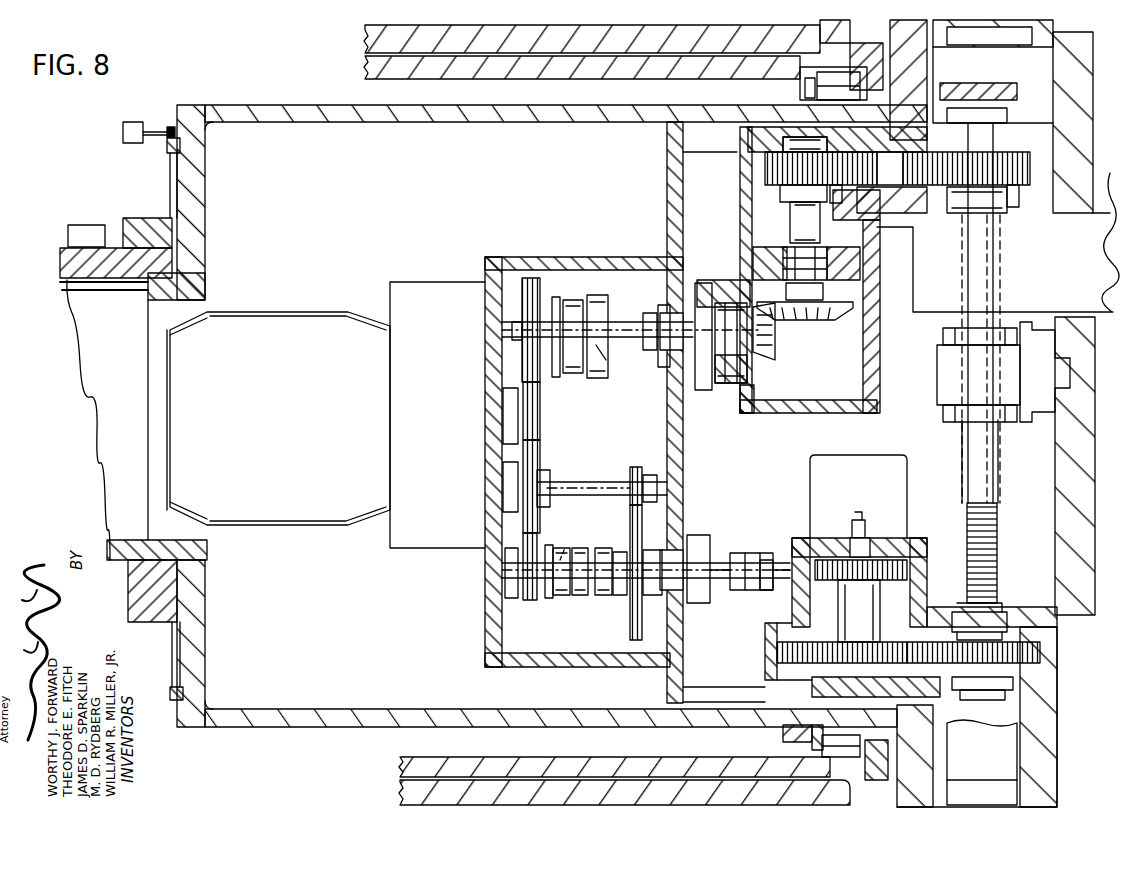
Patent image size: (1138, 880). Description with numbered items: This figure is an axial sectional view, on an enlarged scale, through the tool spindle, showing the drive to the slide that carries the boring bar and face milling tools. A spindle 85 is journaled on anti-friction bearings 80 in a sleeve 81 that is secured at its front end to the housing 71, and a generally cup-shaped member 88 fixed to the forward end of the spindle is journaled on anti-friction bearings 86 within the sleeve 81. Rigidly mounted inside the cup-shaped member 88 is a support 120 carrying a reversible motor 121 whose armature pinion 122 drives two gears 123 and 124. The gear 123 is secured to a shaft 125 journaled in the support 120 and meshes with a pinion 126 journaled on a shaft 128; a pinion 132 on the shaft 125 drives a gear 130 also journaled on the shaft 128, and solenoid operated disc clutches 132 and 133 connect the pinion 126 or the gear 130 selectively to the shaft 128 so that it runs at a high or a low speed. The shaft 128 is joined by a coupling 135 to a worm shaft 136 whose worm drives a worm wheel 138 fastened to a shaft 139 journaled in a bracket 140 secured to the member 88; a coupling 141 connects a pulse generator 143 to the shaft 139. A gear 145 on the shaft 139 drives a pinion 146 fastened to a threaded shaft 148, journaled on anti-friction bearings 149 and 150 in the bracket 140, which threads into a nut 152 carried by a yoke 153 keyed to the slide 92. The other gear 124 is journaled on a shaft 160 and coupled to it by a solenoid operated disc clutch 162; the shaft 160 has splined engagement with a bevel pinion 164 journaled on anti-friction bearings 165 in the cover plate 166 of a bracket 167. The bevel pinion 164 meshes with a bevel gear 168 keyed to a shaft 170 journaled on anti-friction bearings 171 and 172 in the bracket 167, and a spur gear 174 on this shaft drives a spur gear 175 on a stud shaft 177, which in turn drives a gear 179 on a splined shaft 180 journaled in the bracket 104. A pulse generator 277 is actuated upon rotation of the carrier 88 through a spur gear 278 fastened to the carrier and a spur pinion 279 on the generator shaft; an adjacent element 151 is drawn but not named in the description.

The housing 71 is at (364, 42).
The sleeve 81 is at (364, 70).
The cup-shaped member 88 is at (285, 112).
The anti-friction bearings 86 is at (844, 64).
The spur pinion 279 is at (170, 128).
The pulse generator 277 is at (120, 124).
The spur gear 278 is at (173, 700).
The anti-friction bearings 80 is at (92, 228).
The spindle 85 is at (61, 262).
The reversible motor 121 is at (292, 525).
The bracket 104 is at (1104, 177).
The splined shaft 180 is at (998, 223).
The support 120 is at (591, 254).
The gear 124 is at (542, 300).
The pinion 122 is at (540, 423).
The gear 123 is at (537, 462).
The pinion 126 is at (535, 600).
The solenoid operated disc clutch 162 is at (600, 378).
The shaft 160 is at (604, 364).
The shaft 125 is at (590, 477).
The pinion 132 is at (631, 468).
The gear 130 is at (628, 620).
The shaft 128 is at (560, 550).
The solenoid operated disc clutch 133 is at (602, 547).
The coupling 135 is at (749, 551).
The worm shaft 136 is at (776, 590).
The anti-friction bearings 165 is at (738, 385).
The cover plate 166 is at (748, 414).
The bracket 167 is at (876, 376).
The bevel gear 168 is at (793, 321).
The bevel pinion 164 is at (773, 365).
The anti-friction bearing 172 is at (780, 156).
The spur gear 174 is at (765, 177).
The shaft 170 is at (820, 225).
The anti-friction bearing 171 is at (772, 271).
The spur gear 175 is at (842, 186).
The stud shaft 177 is at (897, 218).
The hub 151 is at (952, 214).
The gear 179 is at (1014, 193).
The nut 152 is at (937, 412).
The yoke 153 is at (1042, 418).
The slide 92 is at (1093, 579).
The pulse generator 143 is at (906, 476).
The coupling 141 is at (867, 545).
The bracket 140 is at (916, 540).
The worm wheel 138 is at (891, 582).
The shaft 139 is at (872, 620).
The gear 145 is at (905, 662).
The pinion 146 is at (1041, 652).
The shaft 148 is at (998, 550).
The anti-friction bearing 150 is at (1005, 615).
The anti-friction bearing 149 is at (1038, 684).